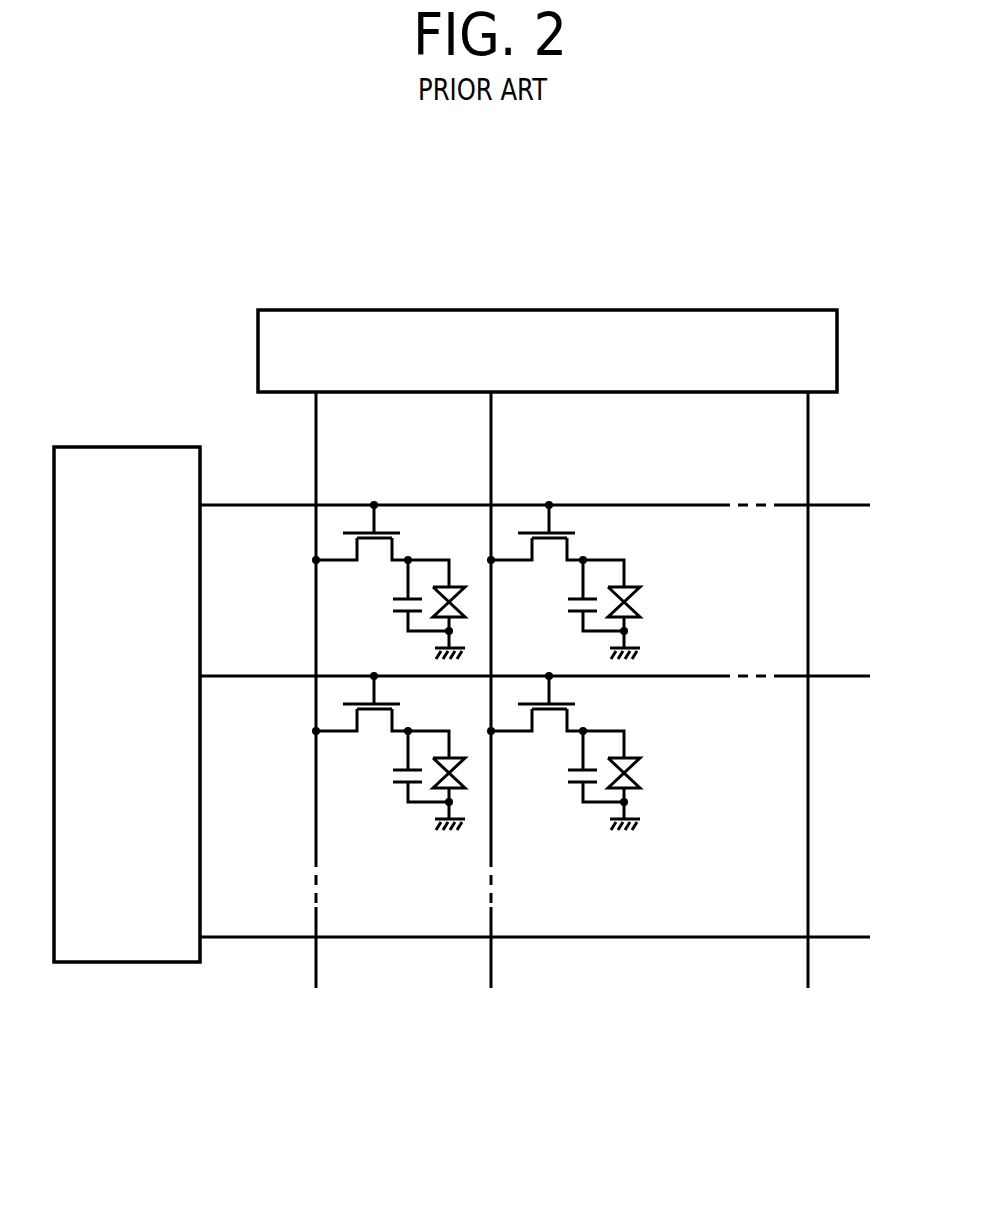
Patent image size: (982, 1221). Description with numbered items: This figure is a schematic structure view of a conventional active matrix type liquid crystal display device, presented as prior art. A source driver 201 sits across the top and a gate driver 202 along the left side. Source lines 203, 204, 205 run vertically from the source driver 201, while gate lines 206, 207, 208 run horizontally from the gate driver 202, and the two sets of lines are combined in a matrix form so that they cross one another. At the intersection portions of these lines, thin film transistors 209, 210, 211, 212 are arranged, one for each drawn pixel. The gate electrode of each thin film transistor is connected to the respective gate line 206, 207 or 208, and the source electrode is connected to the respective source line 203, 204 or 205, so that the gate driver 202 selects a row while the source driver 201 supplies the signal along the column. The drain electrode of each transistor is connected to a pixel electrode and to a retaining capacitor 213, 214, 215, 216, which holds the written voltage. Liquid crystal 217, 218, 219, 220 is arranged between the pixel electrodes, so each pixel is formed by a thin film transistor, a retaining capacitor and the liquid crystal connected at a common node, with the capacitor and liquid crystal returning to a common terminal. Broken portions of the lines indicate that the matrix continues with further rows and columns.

The source driver 201 is at (788, 310).
The gate driver 202 is at (160, 447).
The source line 203 is at (317, 988).
The source line 204 is at (491, 988).
The source line 205 is at (808, 988).
The gate line 206 is at (847, 504).
The gate line 207 is at (843, 675).
The gate line 208 is at (849, 935).
The thin film transistor 209 is at (406, 552).
The thin film transistor 210 is at (561, 532).
The thin film transistor 211 is at (379, 703).
The thin film transistor 212 is at (561, 703).
The retaining capacitor 213 is at (401, 614).
The retaining capacitor 214 is at (567, 605).
The retaining capacitor 215 is at (398, 778).
The retaining capacitor 216 is at (569, 776).
The liquid crystal 217 is at (451, 581).
The liquid crystal 218 is at (636, 609).
The liquid crystal 219 is at (446, 766).
The liquid crystal 220 is at (636, 780).